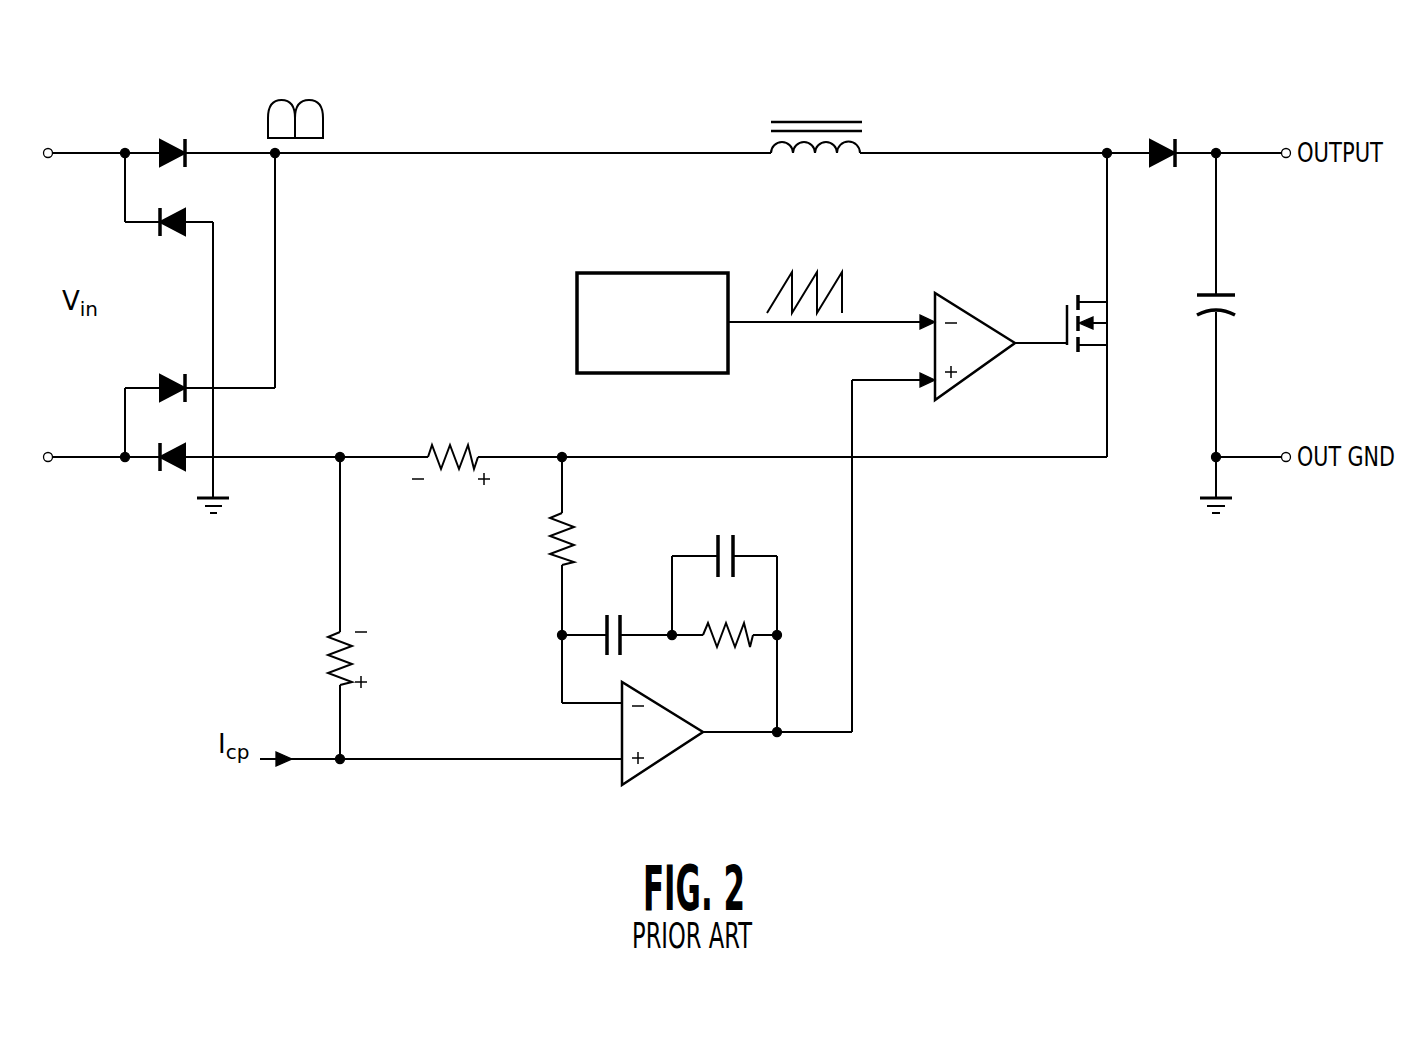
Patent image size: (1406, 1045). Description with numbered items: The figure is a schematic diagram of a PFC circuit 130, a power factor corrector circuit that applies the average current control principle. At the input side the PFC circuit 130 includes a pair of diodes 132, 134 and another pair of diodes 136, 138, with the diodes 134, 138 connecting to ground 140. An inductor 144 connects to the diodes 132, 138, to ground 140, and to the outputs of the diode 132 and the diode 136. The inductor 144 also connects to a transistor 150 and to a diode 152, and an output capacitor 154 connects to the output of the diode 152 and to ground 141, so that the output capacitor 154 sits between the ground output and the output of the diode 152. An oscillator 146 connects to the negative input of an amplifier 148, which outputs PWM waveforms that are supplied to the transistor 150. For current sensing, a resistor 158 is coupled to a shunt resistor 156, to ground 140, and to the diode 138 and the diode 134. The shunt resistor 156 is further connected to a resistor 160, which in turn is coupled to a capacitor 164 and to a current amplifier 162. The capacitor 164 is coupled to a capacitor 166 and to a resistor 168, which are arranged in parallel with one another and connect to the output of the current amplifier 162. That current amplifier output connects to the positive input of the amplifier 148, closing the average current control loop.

The PFC circuit 130 is at (1268, 92).
The diode 132 is at (165, 140).
The diode 134 is at (175, 236).
The diode 136 is at (170, 376).
The diode 138 is at (178, 470).
The ground 140 is at (210, 508).
The ground 141 is at (1212, 508).
The inductor 144 is at (860, 148).
The oscillator 146 is at (577, 308).
The amplifier 148 is at (983, 325).
The transistor 150 is at (1088, 300).
The diode 152 is at (1152, 145).
The output capacitor 154 is at (1225, 292).
The shunt resistor 156 is at (455, 468).
The resistor 158 is at (352, 655).
The resistor 160 is at (553, 545).
The current amplifier 162 is at (620, 774).
The capacitor 164 is at (607, 615).
The capacitor 166 is at (733, 536).
The resistor 168 is at (727, 645).